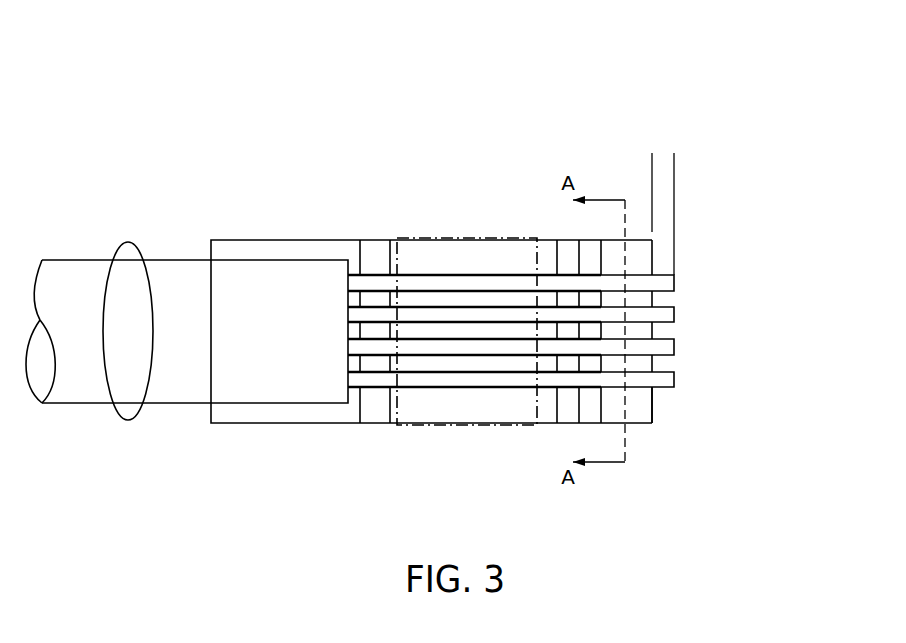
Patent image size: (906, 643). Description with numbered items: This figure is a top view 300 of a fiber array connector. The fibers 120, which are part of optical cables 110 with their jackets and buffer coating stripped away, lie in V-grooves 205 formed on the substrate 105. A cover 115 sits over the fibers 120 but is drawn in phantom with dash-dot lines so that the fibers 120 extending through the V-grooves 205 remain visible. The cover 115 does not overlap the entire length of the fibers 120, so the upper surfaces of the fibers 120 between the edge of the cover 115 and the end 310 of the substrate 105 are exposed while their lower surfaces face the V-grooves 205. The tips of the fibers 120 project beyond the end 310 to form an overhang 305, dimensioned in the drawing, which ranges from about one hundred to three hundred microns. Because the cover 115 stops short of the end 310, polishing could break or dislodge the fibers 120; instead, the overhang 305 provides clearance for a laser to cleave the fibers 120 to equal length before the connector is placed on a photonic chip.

The top view 300 is at (150, 50).
The optical cable 110 is at (128, 243).
The substrate 105 is at (282, 250).
The cover 115 is at (465, 238).
The fibers 120 is at (668, 380).
The V-grooves 205 is at (473, 392).
The overhang 305 is at (715, 164).
The end 310 is at (654, 426).